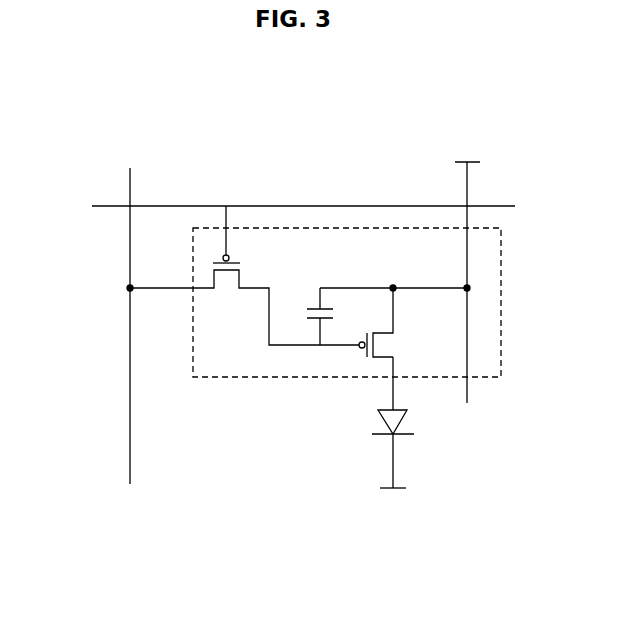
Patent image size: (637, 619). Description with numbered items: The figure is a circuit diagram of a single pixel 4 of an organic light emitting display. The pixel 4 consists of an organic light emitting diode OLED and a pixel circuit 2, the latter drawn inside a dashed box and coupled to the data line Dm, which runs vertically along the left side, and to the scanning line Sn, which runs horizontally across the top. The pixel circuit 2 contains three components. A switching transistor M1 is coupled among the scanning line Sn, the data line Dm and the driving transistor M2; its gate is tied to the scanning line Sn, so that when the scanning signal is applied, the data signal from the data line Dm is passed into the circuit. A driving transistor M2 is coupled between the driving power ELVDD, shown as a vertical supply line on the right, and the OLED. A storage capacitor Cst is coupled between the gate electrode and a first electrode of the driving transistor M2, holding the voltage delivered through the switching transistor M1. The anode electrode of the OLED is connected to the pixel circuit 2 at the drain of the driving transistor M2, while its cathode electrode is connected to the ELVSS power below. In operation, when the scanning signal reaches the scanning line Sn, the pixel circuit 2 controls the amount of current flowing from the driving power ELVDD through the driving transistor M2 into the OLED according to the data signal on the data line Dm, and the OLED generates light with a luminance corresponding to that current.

The pixel 4 is at (320, 190).
The pixel circuit 2 is at (501, 244).
The switching transistor M1 is at (243, 275).
The driving transistor M2 is at (414, 321).
The storage capacitor Cst is at (373, 316).
The organic light emitting diode OLED is at (357, 422).
The data line Dm is at (124, 315).
The scanning line Sn is at (281, 209).
The driving power ELVDD is at (468, 272).
The ELVSS power ELVSS is at (393, 501).